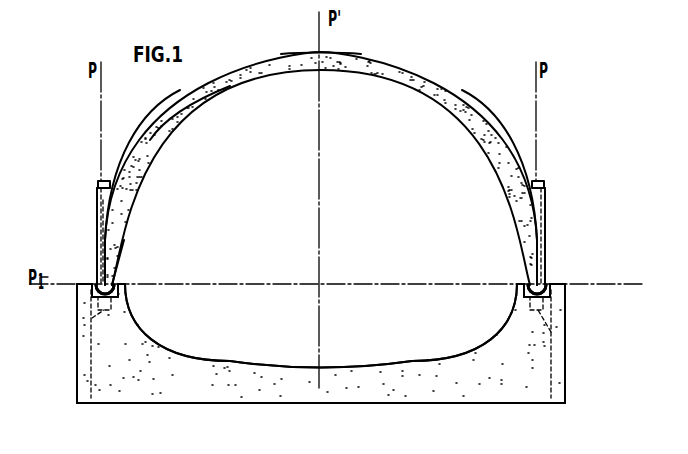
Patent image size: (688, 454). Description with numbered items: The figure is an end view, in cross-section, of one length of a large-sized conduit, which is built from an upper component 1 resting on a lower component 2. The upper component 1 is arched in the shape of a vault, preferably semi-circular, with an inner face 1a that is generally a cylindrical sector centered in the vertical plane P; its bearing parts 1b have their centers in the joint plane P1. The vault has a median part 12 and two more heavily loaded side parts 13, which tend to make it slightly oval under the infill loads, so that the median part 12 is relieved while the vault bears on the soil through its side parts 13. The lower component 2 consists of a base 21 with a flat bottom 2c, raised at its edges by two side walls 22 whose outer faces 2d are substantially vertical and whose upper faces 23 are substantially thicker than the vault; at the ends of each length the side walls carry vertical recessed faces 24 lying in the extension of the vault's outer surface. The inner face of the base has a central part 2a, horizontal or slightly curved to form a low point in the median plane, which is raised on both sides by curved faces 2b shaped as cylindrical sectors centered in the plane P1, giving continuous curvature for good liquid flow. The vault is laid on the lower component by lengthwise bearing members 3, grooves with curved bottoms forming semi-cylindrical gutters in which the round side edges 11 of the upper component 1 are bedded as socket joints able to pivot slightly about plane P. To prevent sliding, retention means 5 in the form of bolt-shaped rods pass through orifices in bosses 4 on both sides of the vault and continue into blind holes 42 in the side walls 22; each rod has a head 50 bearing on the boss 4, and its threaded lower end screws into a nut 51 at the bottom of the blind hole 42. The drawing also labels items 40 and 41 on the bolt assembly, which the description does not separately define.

The upper component 1 is at (462, 95).
The inner face of the upper component 1a is at (187, 121).
The bearing parts 1b is at (118, 265).
The side edges 11 is at (113, 283).
The median part 12 is at (327, 63).
The side parts 13 is at (120, 212).
The lower component 2 is at (545, 376).
The central part 2a is at (255, 362).
The curved faces 2b is at (150, 338).
The flat bottom 2c is at (262, 405).
The outer faces 2d is at (77, 380).
The base 21 is at (345, 390).
The side walls 22 is at (92, 352).
The upper faces 23 is at (90, 283).
The vertical recessed faces 24 is at (91, 404).
The bearing members 3 is at (92, 288).
The bosses 4 is at (100, 213).
The bolt head 40 is at (97, 184).
The bolt shank 41 is at (100, 236).
The blind holes 42 is at (98, 301).
The retention means 5 is at (100, 194).
The head 50 is at (101, 178).
The nuts 51 is at (92, 318).